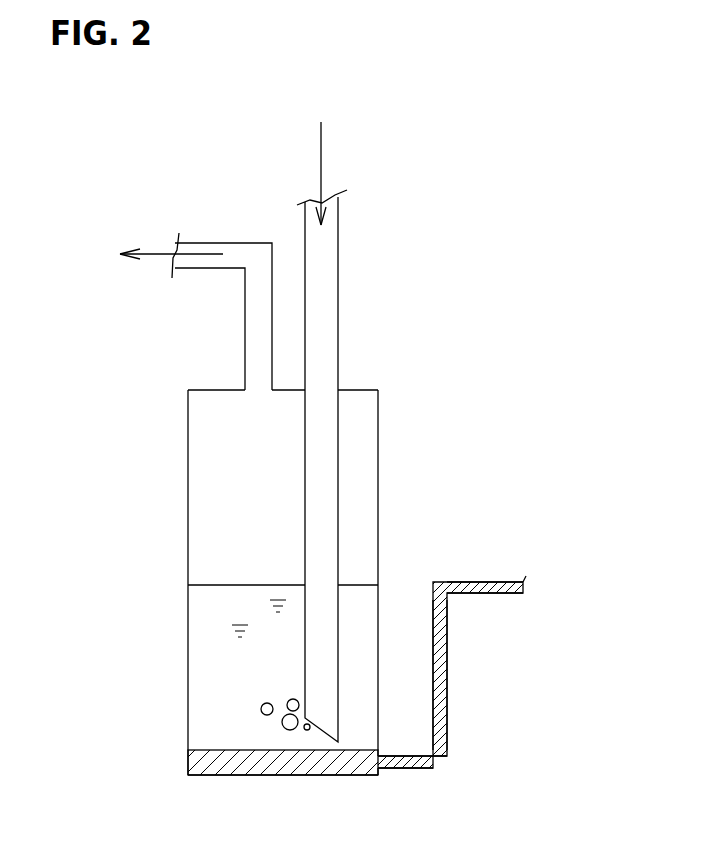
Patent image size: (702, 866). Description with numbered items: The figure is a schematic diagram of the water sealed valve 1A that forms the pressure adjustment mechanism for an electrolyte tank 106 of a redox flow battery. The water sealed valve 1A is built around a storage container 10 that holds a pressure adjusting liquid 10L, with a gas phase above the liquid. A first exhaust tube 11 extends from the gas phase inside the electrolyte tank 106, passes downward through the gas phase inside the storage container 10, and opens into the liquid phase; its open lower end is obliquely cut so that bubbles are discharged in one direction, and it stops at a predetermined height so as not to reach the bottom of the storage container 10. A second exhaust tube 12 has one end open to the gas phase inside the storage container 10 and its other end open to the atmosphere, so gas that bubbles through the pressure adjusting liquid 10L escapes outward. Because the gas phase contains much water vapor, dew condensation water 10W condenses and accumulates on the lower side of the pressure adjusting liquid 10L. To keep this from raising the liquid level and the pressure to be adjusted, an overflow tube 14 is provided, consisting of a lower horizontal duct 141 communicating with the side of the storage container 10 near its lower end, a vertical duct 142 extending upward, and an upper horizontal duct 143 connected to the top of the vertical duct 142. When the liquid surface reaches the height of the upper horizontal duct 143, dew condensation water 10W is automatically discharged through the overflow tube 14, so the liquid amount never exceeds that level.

The water sealed valve 1A is at (150, 410).
The storage container 10 is at (187, 482).
The dew condensation water 10W is at (188, 762).
The pressure adjusting liquid 10L is at (195, 622).
The second exhaust tube 12 is at (233, 240).
The first exhaust tube 11 is at (338, 445).
The electrolyte tank 106 is at (318, 158).
The overflow tube 14 is at (481, 695).
The horizontal duct 141 is at (413, 768).
The vertical duct 142 is at (447, 690).
The horizontal duct 143 is at (495, 593).